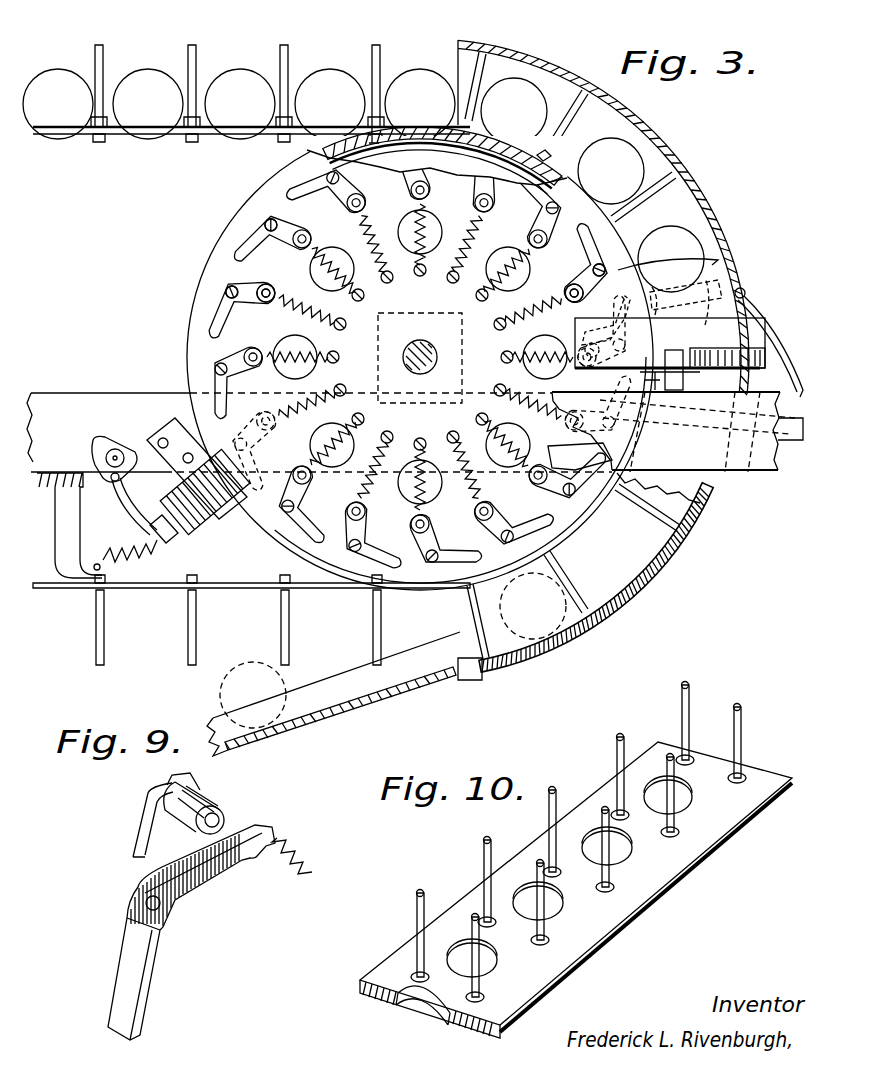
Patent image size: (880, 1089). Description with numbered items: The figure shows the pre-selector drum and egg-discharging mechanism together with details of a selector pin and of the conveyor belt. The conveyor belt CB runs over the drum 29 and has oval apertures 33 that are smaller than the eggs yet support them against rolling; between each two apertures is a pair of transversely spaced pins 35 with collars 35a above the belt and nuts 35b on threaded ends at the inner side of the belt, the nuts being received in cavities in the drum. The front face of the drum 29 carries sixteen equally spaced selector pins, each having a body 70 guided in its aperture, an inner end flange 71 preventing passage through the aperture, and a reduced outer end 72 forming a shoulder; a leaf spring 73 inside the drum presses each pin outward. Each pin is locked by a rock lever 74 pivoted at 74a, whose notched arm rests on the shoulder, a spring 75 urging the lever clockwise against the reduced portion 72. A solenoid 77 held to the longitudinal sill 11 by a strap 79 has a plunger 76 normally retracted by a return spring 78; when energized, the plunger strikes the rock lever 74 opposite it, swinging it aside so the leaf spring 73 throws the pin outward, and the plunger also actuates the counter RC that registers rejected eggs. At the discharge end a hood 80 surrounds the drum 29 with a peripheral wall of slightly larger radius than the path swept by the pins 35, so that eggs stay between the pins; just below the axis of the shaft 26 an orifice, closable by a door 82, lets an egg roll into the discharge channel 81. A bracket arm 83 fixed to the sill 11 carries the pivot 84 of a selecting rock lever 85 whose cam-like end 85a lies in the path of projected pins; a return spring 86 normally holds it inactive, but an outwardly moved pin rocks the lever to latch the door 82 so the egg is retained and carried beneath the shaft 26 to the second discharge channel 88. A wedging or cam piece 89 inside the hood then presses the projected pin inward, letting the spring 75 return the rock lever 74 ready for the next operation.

In FIG. 3, the longitudinal sill 11 is at (50, 393).
In FIG. 3, the shaft 26 is at (427, 336).
In FIG. 3, the drum 29 is at (211, 250).
In FIG. 10, the apertures 33 is at (692, 803).
In FIG. 3, the pins 35 is at (187, 53).
In FIG. 10, the pins 35 is at (486, 840).
In FIG. 3, the collars 35a is at (277, 120).
In FIG. 10, the collars 35a is at (743, 773).
In FIG. 3, the nuts 35b is at (185, 141).
In FIG. 3, the pin body 70 is at (265, 302).
In FIG. 9, the pin body 70 is at (197, 802).
In FIG. 9, the inner end flange 71 is at (183, 782).
In FIG. 3, the reduced outer end 72 is at (270, 297).
In FIG. 9, the reduced outer end 72 is at (226, 823).
In FIG. 9, the leaf spring 73 is at (138, 828).
In FIG. 3, the rock lever 74 is at (253, 231).
In FIG. 9, the rock lever 74 is at (163, 930).
In FIG. 3, the pivot 74a is at (268, 221).
In FIG. 3, the spring 75 is at (318, 263).
In FIG. 9, the spring 75 is at (300, 850).
In FIG. 3, the plunger 76 is at (178, 540).
In FIG. 3, the solenoid 77 is at (198, 518).
In FIG. 3, the return spring 78 is at (128, 548).
In FIG. 3, the strap 79 is at (162, 435).
In FIG. 3, the hood 80 is at (706, 198).
In FIG. 3, the discharge channel 81 is at (802, 440).
In FIG. 3, the door 82 is at (771, 330).
In FIG. 3, the bracket arm 83 is at (647, 373).
In FIG. 3, the pivot 84 is at (670, 295).
In FIG. 3, the selecting rock lever 85 is at (727, 358).
In FIG. 3, the cam-like end 85a is at (587, 326).
In FIG. 3, the return spring 86 is at (691, 395).
In FIG. 3, the second discharge channel 88 is at (378, 688).
In FIG. 3, the wedging or cam piece 89 is at (570, 528).
In FIG. 3, the conveyor belt CB is at (251, 357).
In FIG. 10, the conveyor belt CB is at (700, 853).
In FIG. 3, the counter mechanism RC is at (97, 443).